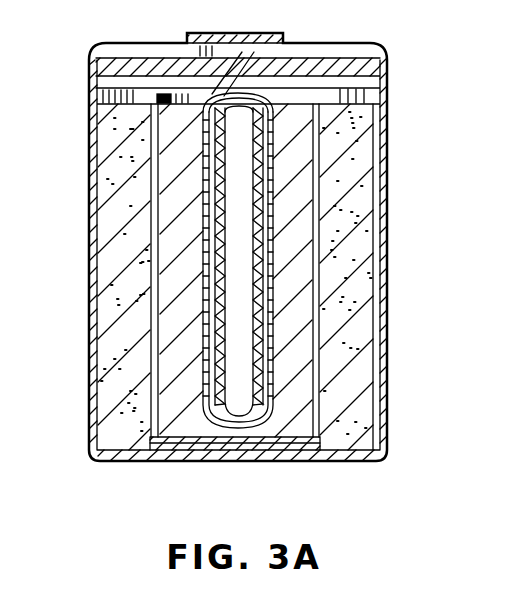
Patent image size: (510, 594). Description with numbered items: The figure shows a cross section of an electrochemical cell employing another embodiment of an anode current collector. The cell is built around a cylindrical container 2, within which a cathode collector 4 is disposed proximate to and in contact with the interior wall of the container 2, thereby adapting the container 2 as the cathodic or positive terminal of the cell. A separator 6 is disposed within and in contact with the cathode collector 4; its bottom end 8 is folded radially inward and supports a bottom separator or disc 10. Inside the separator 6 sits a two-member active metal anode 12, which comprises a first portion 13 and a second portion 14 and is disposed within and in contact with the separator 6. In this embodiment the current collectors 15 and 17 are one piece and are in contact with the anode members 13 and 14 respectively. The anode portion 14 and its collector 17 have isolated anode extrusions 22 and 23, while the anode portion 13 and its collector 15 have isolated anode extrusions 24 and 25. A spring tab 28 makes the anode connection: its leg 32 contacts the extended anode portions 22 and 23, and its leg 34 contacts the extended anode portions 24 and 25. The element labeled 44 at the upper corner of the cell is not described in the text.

The cylindrical container 2 is at (386, 402).
The cathode collector 4 is at (383, 440).
The separator 6 is at (383, 186).
The bottom end 8 is at (300, 455).
The bottom separator 10 is at (250, 453).
The active metal anode 12 is at (340, 152).
The first portion 13 is at (195, 240).
The second portion 14 is at (300, 257).
The current collector 15 is at (190, 316).
The current collector 17 is at (318, 270).
The anode extrusion 22 is at (283, 232).
The anode extrusion 23 is at (275, 390).
The anode extrusion 24 is at (158, 218).
The extended anode portion 25 is at (155, 345).
The spring tab 28 is at (273, 97).
The leg 32 is at (270, 312).
The leg 34 is at (160, 168).
The cover seal 44 is at (383, 77).